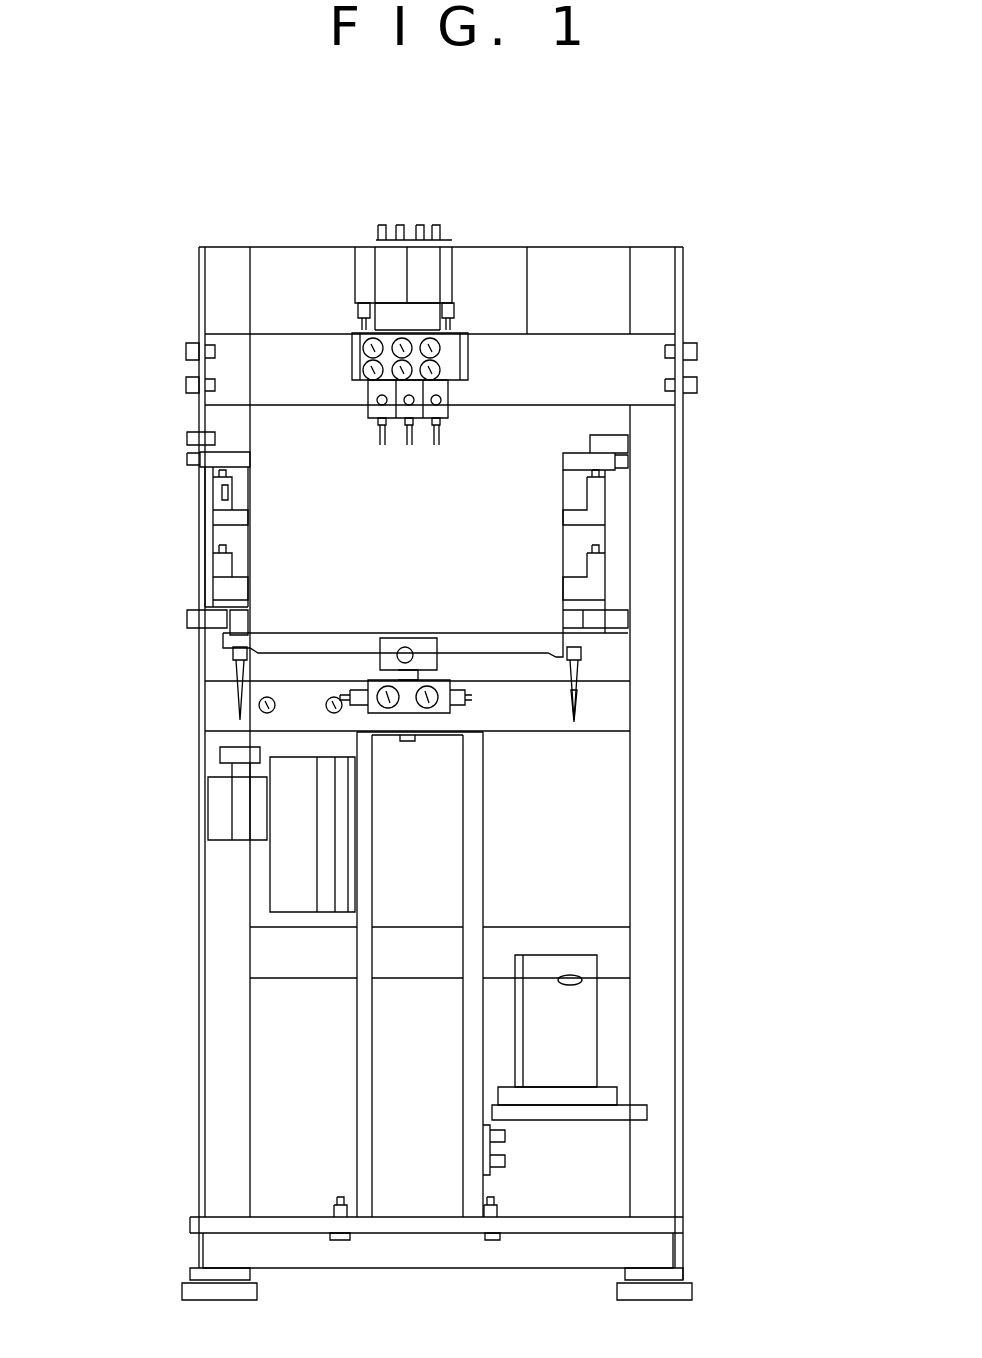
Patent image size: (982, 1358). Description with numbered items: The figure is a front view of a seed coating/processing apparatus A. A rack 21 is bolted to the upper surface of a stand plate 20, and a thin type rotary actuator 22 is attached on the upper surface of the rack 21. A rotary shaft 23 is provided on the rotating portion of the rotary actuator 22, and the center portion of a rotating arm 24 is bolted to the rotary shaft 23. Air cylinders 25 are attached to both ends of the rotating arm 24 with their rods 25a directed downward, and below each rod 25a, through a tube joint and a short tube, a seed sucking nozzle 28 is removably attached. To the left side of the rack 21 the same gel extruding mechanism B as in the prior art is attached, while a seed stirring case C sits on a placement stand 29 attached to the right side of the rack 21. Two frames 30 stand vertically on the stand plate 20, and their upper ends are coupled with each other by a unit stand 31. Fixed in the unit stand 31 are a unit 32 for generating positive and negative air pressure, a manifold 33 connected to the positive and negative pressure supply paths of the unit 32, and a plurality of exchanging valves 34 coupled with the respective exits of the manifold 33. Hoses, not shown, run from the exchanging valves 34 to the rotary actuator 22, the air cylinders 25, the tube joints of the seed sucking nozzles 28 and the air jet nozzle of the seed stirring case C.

The seed coating/processing apparatus A is at (751, 258).
The gel extruding mechanism B is at (290, 876).
The seed stirring case C is at (580, 1013).
The stand plate 20 is at (295, 1218).
The rack 21 is at (360, 1075).
The thin type rotary actuator 22 is at (355, 700).
The rotary shaft 23 is at (360, 672).
The rotating arm 24 is at (305, 640).
The air cylinder 25 is at (232, 543).
The rod 25a is at (238, 662).
The seed sucking nozzle 28 is at (578, 692).
The placement stand 29 is at (634, 1122).
The frame 30 is at (215, 1018).
The unit stand 31 is at (553, 352).
The unit for generating positive air pressure and negative air pressure 32 is at (430, 280).
The manifold 33 is at (352, 345).
The exchanging valve 34 is at (365, 400).